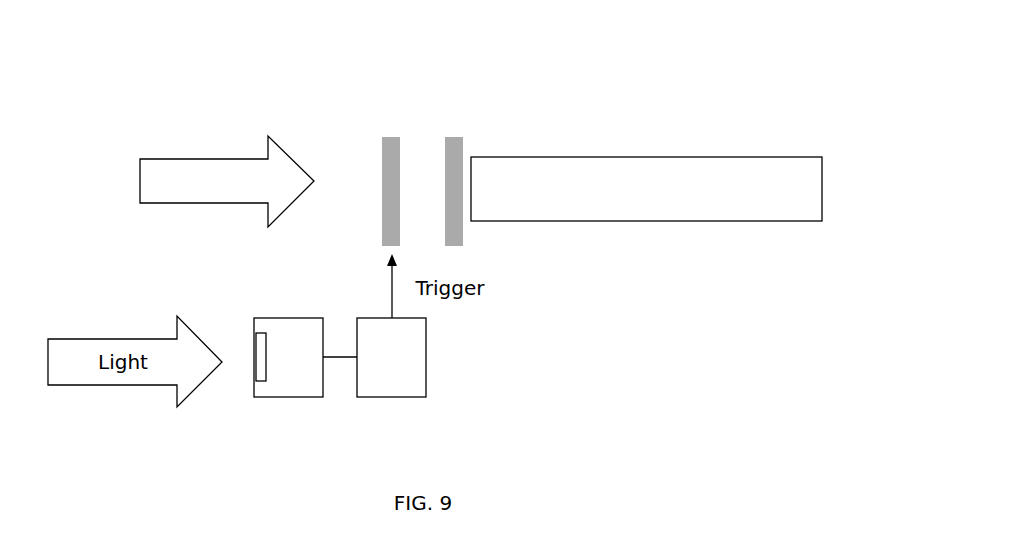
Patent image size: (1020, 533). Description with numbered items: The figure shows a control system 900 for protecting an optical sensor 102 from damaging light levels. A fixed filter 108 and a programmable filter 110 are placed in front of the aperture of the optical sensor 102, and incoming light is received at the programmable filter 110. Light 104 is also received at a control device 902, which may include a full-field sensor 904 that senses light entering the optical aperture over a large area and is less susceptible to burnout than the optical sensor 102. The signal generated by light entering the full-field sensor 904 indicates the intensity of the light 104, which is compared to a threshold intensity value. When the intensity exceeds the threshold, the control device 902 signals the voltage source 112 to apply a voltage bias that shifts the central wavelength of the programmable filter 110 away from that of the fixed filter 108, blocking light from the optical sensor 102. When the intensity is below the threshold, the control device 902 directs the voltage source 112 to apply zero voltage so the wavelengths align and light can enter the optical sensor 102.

The control system 900 is at (336, 78).
The light 104 is at (173, 159).
The programmable filter 110 is at (393, 137).
The fixed filter 108 is at (453, 137).
The optical sensor 102 is at (770, 157).
The control device 902 is at (293, 397).
The full-field sensor 904 is at (252, 366).
The voltage source 112 is at (393, 397).